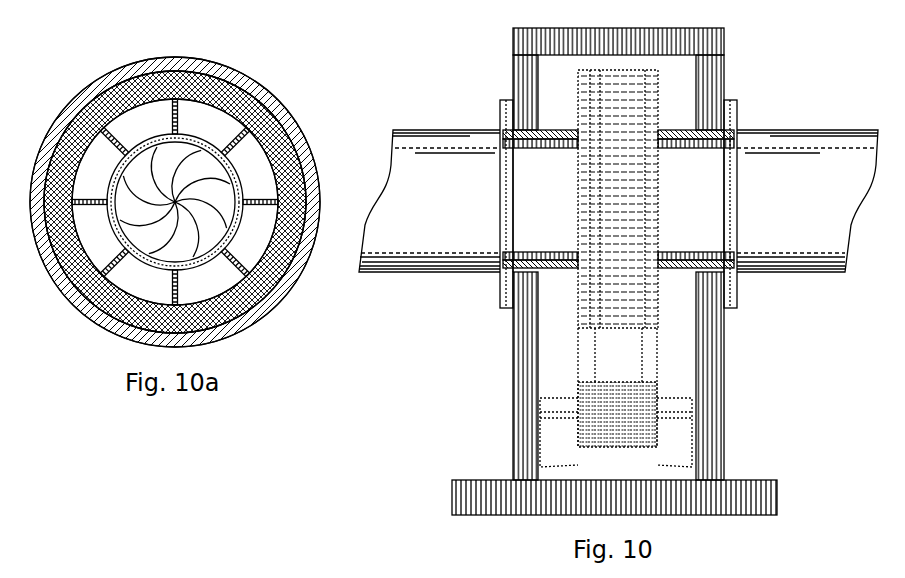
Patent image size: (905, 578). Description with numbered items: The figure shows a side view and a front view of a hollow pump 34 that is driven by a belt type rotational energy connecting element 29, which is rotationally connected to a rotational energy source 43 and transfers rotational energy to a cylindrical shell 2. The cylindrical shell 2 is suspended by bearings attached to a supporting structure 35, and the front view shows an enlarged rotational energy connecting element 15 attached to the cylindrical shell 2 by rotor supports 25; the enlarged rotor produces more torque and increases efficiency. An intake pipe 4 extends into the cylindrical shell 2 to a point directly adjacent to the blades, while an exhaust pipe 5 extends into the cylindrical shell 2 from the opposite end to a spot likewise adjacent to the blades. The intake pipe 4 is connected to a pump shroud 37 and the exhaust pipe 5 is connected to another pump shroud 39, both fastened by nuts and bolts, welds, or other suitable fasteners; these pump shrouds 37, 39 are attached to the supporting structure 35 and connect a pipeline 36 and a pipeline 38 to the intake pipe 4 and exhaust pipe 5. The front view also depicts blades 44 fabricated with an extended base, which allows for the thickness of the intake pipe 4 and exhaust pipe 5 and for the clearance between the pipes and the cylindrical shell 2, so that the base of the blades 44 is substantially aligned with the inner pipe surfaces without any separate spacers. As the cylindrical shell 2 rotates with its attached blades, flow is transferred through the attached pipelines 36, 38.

In FIG. 10A, the cylindrical shell 2 is at (108, 177).
In FIG. 10, the cylindrical shell 2 is at (618, 202).
In FIG. 10A, the intake pipe 4 is at (112, 203).
In FIG. 10, the intake pipe 4 is at (540, 148).
In FIG. 10, the exhaust pipe 5 is at (700, 148).
In FIG. 10A, the enlarged rotational energy connecting element 15 is at (185, 89).
In FIG. 10A, the rotor supports 25 is at (178, 127).
In FIG. 10A, the belt type rotational energy connecting element 29 is at (97, 78).
In FIG. 10, the belt type rotational energy connecting element 29 is at (632, 365).
In FIG. 10, the pump 34 is at (598, 260).
In FIG. 10, the supporting structure 35 is at (726, 340).
In FIG. 10, the pipeline 36 is at (452, 210).
In FIG. 10, the pump shroud 37 is at (500, 290).
In FIG. 10, the pipeline 38 is at (807, 210).
In FIG. 10, the pump shroud 39 is at (737, 290).
In FIG. 10, the rotational energy source 43 is at (632, 420).
In FIG. 10A, the extended blades 44 is at (232, 203).